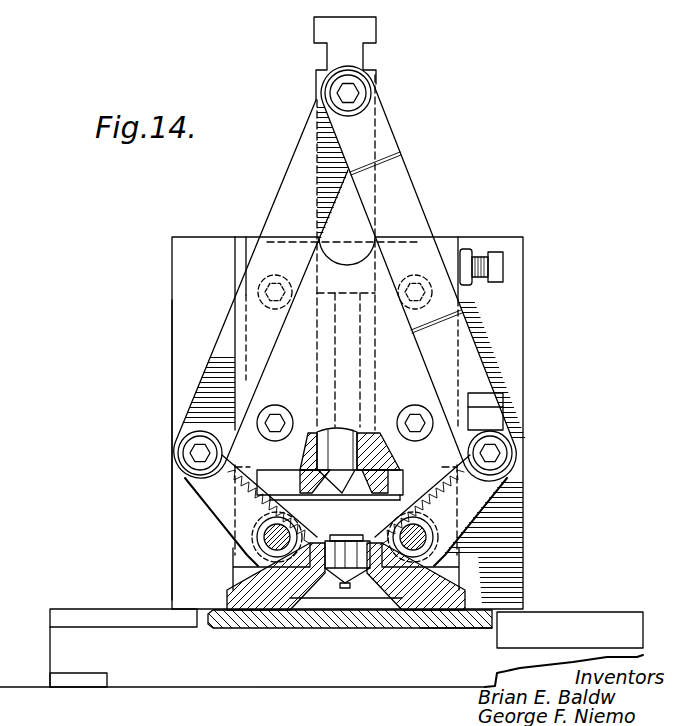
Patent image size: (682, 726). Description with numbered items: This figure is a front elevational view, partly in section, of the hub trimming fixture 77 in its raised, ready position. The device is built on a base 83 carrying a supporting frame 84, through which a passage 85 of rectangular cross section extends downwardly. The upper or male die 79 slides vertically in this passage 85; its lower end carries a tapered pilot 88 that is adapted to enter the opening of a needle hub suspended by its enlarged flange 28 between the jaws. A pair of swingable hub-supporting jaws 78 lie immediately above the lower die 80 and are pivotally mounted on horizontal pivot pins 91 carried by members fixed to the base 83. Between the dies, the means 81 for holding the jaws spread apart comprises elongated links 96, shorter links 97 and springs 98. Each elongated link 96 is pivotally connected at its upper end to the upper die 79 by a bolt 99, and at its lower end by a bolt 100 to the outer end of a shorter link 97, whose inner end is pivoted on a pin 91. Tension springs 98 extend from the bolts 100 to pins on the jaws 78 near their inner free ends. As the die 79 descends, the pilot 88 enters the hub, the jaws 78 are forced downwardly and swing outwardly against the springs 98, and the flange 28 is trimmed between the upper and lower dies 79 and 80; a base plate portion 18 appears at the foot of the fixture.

The trimming fixture 77 is at (166, 322).
The supporting frame 84 is at (168, 362).
The passage 85 is at (372, 367).
The upper die 79 is at (368, 28).
The bolt 99 is at (362, 92).
The link 96 is at (228, 336).
The bolt 100 is at (178, 455).
The means for maintaining the jaws in spread-apart positions 81 is at (190, 485).
The shorter link 97 is at (205, 502).
The spring 98 is at (193, 488).
The tapered pilot 88 is at (330, 494).
The enlarged flange 28 is at (362, 533).
The pivot pin 91 is at (238, 568).
The lower die 80 is at (320, 598).
The hub-supporting jaw 78 is at (240, 628).
The base plate end 18 is at (446, 628).
The base 83 is at (132, 689).